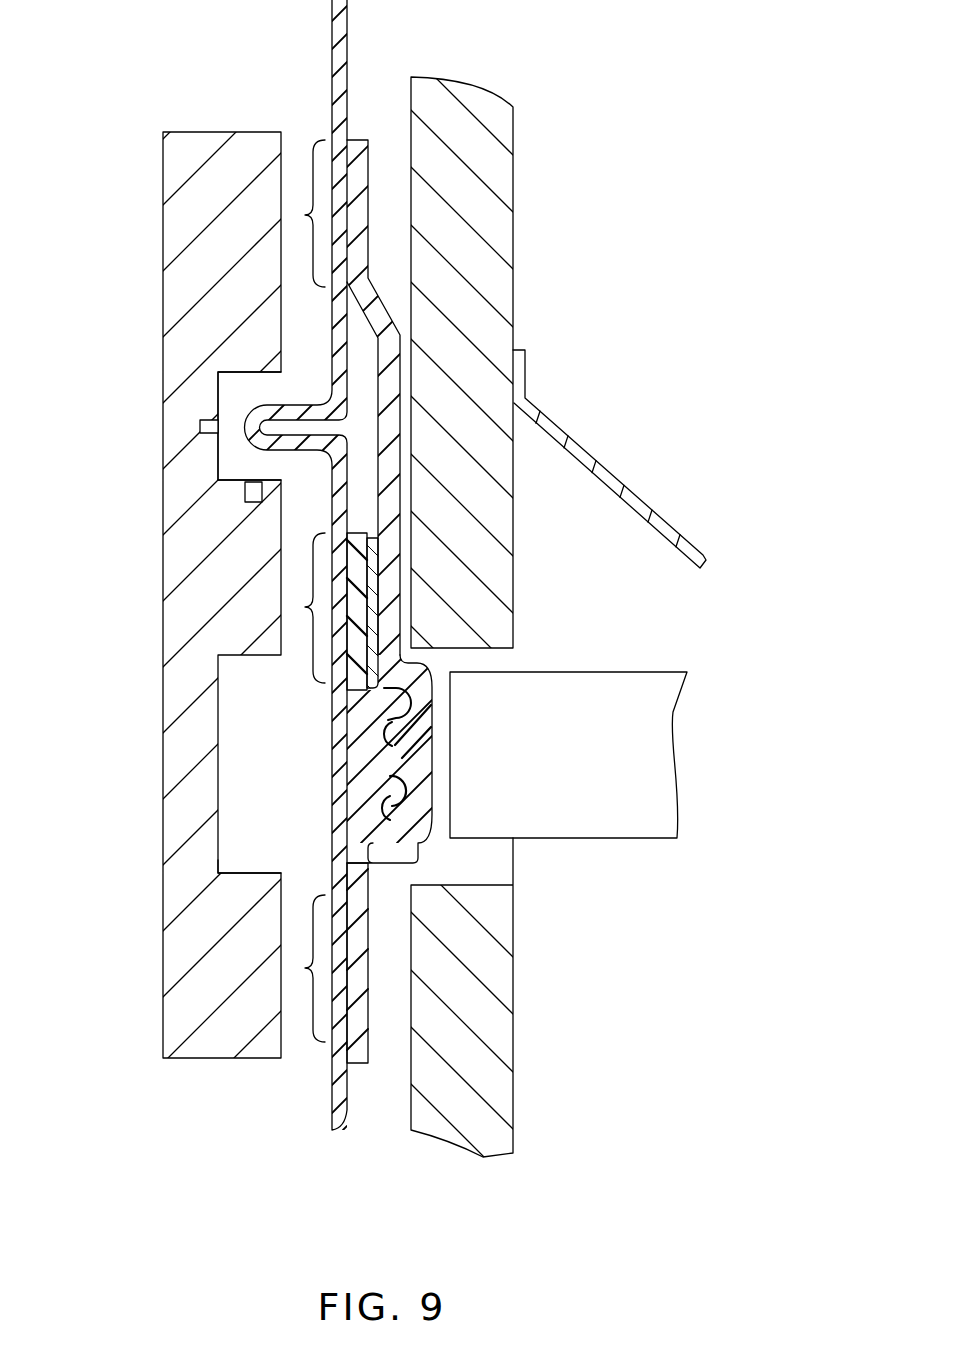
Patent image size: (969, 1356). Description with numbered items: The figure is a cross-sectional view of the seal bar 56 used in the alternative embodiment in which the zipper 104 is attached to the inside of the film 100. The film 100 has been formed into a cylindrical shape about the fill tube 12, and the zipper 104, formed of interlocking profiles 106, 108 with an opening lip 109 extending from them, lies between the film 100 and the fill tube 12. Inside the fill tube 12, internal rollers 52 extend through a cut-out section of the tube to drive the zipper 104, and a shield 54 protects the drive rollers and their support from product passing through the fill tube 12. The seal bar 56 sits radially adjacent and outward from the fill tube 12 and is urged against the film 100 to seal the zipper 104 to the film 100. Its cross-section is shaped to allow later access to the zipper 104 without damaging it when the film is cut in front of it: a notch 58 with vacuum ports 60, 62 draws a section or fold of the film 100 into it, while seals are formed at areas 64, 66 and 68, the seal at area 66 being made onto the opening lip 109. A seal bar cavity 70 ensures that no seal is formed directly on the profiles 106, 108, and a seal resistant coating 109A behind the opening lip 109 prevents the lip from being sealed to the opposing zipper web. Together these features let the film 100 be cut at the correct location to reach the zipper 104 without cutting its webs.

The fill tube 12 is at (500, 170).
The internal rollers 52 is at (643, 735).
The shield 54 is at (627, 493).
The seal bar 56 is at (176, 239).
The notch 58 is at (247, 368).
The vacuum port 60 is at (200, 427).
The vacuum port 62 is at (246, 492).
The seal area 64 is at (305, 215).
The seal area 66 is at (305, 607).
The seal area 68 is at (305, 968).
The seal bar cavity 70 is at (225, 875).
The film 100 is at (336, 50).
The zipper 104 is at (418, 683).
The interlocking profile 106 is at (357, 768).
The interlocking profile 108 is at (415, 758).
The opening lip 109 is at (353, 604).
The seal resistant coating 109A is at (373, 652).